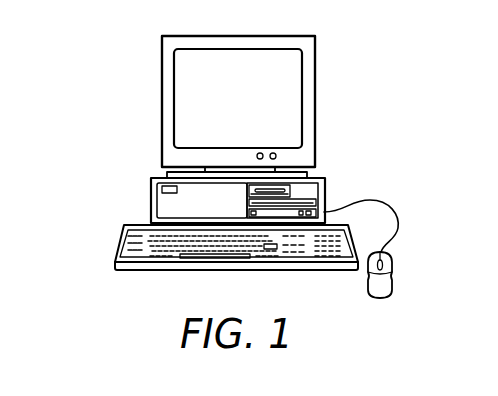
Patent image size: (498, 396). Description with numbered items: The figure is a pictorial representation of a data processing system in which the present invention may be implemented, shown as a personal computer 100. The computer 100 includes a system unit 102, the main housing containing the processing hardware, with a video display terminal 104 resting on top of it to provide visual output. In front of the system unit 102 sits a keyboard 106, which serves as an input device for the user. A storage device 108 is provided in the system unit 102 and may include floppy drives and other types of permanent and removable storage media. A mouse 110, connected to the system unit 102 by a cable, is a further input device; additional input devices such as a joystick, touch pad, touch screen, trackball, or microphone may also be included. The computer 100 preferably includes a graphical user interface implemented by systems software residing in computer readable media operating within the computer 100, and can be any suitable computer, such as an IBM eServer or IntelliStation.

The computer 100 is at (96, 88).
The system unit 102 is at (150, 196).
The video display terminal 104 is at (316, 103).
The keyboard 106 is at (143, 270).
The storage device 108 is at (323, 197).
The mouse 110 is at (380, 298).